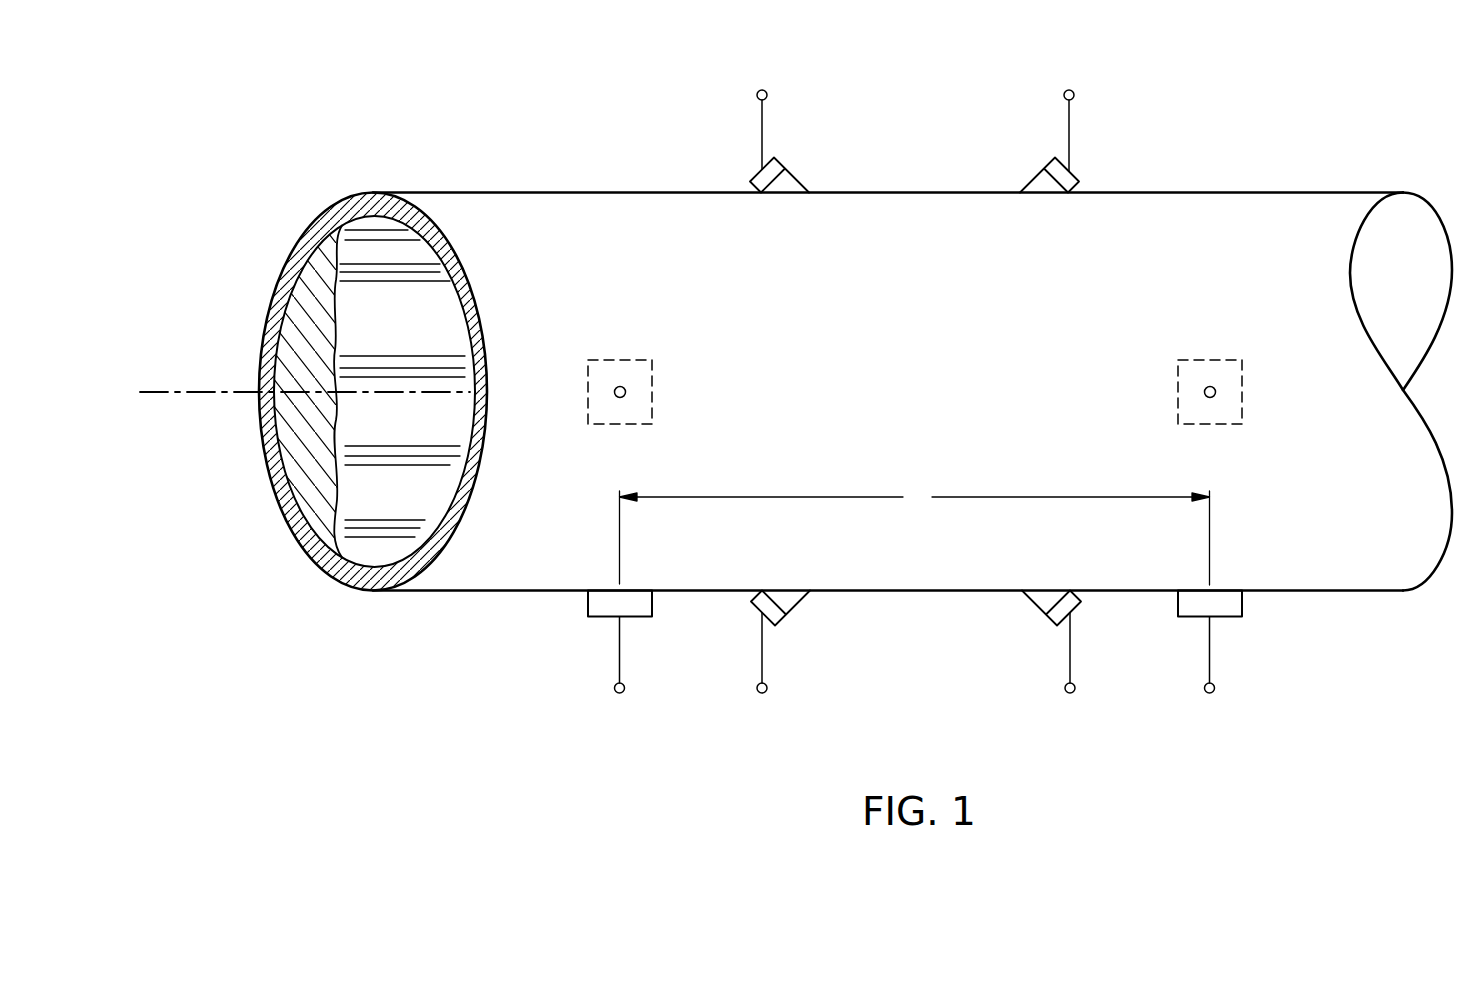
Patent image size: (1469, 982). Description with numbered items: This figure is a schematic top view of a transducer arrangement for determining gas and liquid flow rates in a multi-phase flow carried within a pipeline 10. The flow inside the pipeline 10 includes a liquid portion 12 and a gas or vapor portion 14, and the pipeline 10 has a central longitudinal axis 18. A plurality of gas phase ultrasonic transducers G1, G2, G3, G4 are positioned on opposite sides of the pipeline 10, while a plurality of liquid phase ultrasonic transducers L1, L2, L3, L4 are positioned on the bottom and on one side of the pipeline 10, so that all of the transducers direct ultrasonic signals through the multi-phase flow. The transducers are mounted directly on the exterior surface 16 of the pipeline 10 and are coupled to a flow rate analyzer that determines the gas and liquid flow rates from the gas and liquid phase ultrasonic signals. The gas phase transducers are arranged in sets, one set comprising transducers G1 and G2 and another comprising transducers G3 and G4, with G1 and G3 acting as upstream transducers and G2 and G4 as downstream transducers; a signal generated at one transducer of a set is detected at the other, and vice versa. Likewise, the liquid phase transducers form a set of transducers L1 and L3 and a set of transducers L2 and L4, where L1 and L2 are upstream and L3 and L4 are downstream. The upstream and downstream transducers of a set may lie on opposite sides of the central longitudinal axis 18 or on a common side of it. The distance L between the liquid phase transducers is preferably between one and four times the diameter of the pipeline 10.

The pipeline 10 is at (1293, 192).
The liquid portion 12 is at (277, 427).
The gas or vapor portion 14 is at (445, 482).
The exterior surface 16 is at (534, 268).
The central longitudinal axis 18 is at (165, 392).
The gas phase ultrasonic transducer G1 is at (762, 128).
The gas phase ultrasonic transducer G2 is at (1070, 665).
The gas phase ultrasonic transducer G3 is at (762, 665).
The gas phase ultrasonic transducer G4 is at (1069, 135).
The liquid phase ultrasonic transducer L1 is at (652, 397).
The liquid phase ultrasonic transducer L2 is at (620, 665).
The liquid phase ultrasonic transducer L3 is at (1242, 397).
The liquid phase ultrasonic transducer L4 is at (1210, 665).
The distance L is at (915, 533).